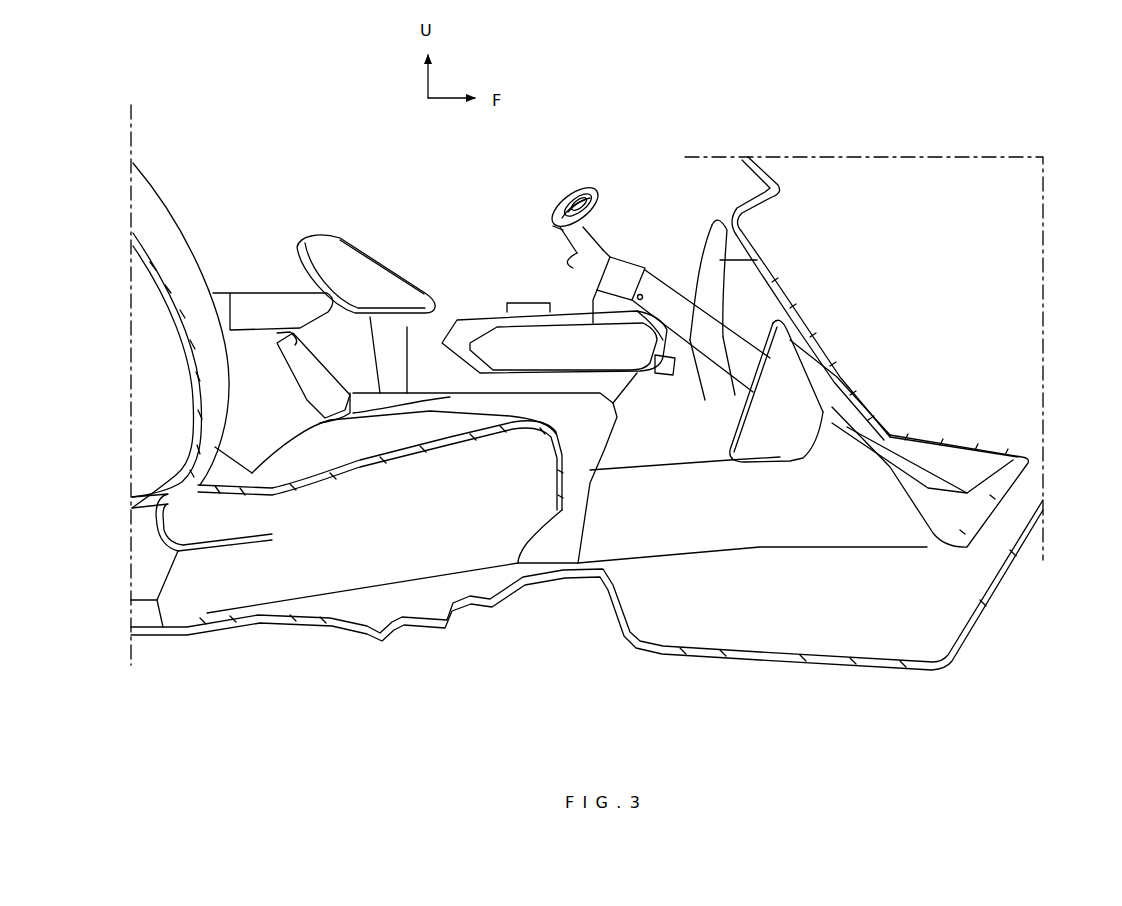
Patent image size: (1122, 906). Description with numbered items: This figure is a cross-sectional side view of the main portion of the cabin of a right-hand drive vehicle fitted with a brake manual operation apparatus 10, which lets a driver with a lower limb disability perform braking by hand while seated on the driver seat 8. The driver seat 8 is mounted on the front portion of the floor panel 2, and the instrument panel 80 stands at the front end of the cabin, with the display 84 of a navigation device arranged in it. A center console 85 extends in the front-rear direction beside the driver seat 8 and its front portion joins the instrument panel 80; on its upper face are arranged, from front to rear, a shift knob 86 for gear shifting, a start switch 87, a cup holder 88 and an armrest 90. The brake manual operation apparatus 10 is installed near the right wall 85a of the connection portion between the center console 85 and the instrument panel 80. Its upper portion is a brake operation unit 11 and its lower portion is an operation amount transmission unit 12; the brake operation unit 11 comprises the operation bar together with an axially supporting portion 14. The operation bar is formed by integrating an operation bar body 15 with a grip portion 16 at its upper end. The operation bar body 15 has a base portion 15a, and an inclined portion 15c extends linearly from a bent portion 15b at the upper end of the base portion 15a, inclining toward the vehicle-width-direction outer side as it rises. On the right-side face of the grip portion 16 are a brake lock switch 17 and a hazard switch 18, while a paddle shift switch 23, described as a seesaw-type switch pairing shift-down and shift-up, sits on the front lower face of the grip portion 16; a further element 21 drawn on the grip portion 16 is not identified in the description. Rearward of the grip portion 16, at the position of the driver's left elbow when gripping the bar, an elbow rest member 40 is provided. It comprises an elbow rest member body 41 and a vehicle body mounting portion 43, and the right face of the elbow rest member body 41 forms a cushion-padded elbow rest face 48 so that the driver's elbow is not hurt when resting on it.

The floor panel 2 is at (765, 650).
The driver seat 8 is at (172, 216).
The brake manual operation apparatus 10 is at (646, 178).
The brake operation unit 11 is at (708, 376).
The operation amount transmission unit 12 is at (810, 474).
The axially supporting portion 14 is at (724, 337).
The operation bar body 15 is at (649, 307).
The base portion 15a is at (648, 332).
The bent portion 15b is at (576, 298).
The inclined portion 15c is at (573, 268).
The grip portion 16 is at (567, 190).
The brake lock switch 17 is at (550, 226).
The hazard switch 18 is at (581, 192).
The knob cover 21 is at (560, 211).
The paddle shift switch 23 is at (592, 216).
The elbow rest member 40 is at (366, 245).
The elbow rest member body 41 is at (363, 246).
The vehicle body mounting portion 43 is at (407, 353).
The elbow rest face 48 is at (375, 268).
The instrument panel 80 is at (745, 182).
The display of a navigation device 84 is at (712, 226).
The center console 85 is at (611, 387).
The right wall 85a is at (668, 455).
The shift knob 86 is at (618, 285).
The start switch 87 is at (520, 302).
The cup holder 88 is at (368, 385).
The armrest 90 is at (262, 291).